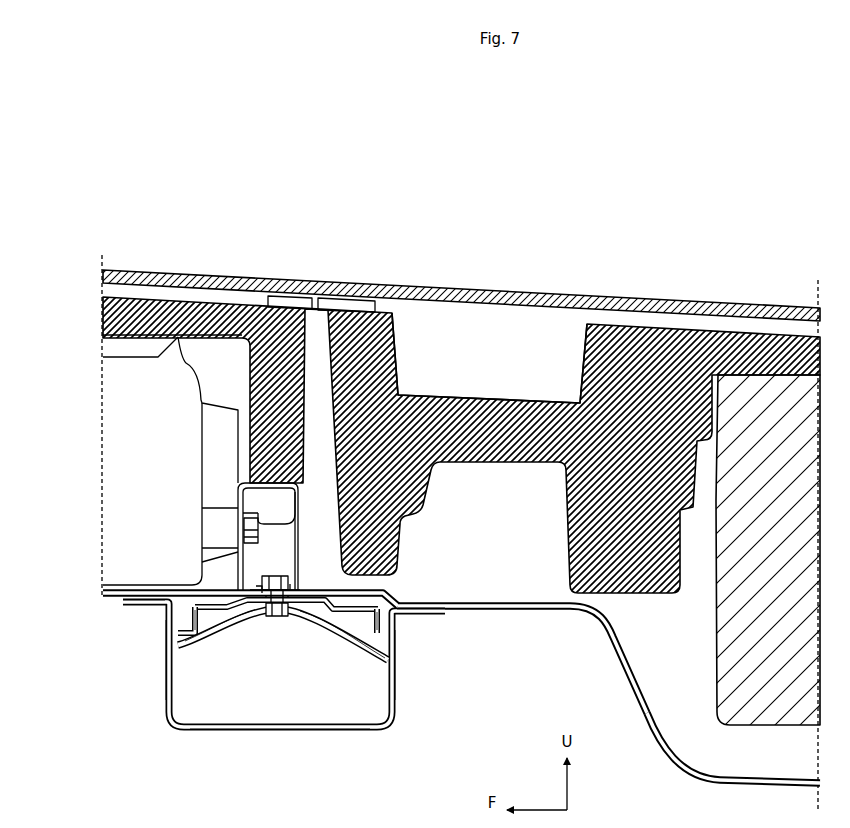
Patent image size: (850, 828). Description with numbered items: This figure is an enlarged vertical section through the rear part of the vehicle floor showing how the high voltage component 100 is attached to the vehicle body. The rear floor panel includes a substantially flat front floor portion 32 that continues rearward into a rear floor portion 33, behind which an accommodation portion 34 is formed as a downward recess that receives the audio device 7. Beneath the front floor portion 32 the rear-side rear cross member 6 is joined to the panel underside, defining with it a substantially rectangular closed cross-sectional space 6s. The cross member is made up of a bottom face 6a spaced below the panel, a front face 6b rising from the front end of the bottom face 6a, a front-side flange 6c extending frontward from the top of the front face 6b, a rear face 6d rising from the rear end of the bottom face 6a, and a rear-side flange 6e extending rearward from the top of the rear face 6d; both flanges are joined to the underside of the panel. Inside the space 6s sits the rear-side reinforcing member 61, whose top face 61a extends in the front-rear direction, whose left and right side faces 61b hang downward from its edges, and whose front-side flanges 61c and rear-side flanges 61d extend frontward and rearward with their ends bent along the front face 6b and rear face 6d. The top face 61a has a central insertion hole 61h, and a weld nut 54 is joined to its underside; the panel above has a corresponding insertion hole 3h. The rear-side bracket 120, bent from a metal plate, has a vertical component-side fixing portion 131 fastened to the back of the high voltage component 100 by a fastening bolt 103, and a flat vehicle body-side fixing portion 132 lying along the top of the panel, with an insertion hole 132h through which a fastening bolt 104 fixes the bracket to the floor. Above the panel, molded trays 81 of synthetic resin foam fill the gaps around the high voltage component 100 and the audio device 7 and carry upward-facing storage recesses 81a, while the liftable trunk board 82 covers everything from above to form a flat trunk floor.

The molded tray 81 is at (196, 306).
The storage recess 81a is at (497, 369).
The trunk board 82 is at (487, 288).
The audio device 7 is at (710, 656).
The high voltage component 100 is at (197, 367).
The rear-side bracket 120 is at (238, 485).
The component-side fixing portion 131 is at (243, 517).
The fastening bolt 103 is at (258, 520).
The vehicle body-side fixing portion 132 is at (258, 581).
The insertion hole 132h is at (293, 586).
The fastening bolt 104 is at (282, 576).
The insertion hole 3h is at (299, 594).
The front floor portion 32 is at (110, 603).
The rear floor portion 33 is at (520, 611).
The accommodation portion 34 is at (673, 715).
The rear-side rear cross member 6 is at (212, 736).
The bottom face 6a is at (283, 732).
The front face 6b is at (170, 688).
The front-side flange 6c is at (140, 605).
The rear face 6d is at (397, 683).
The rear-side flange 6e is at (422, 613).
The closed cross-sectional space 6s is at (273, 713).
The rear-side reinforcing member 61 is at (317, 641).
The top face 61a is at (352, 618).
The side face 61b is at (203, 655).
The front-side flange 61c is at (170, 646).
The rear-side flange 61d is at (400, 650).
The insertion hole 61h is at (266, 614).
The weld nut 54 is at (280, 618).